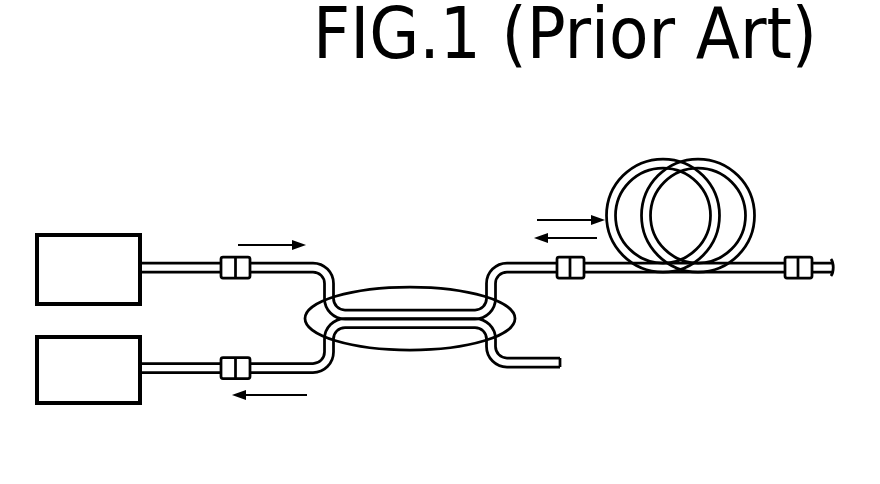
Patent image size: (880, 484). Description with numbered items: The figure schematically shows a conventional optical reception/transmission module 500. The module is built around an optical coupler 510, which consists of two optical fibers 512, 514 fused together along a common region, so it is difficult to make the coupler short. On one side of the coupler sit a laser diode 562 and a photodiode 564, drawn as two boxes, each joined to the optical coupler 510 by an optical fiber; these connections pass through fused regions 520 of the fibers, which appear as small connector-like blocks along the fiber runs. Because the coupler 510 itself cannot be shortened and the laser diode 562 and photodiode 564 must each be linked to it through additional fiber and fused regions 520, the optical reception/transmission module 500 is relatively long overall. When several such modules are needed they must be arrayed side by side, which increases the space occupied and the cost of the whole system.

The optical reception/transmission module 500 is at (400, 176).
The optical coupler 510 is at (395, 352).
The optical fiber 512 is at (510, 261).
The optical fiber 514 is at (510, 369).
The fused region 520 is at (226, 256).
The laser diode 562 is at (115, 243).
The photodiode 564 is at (113, 390).